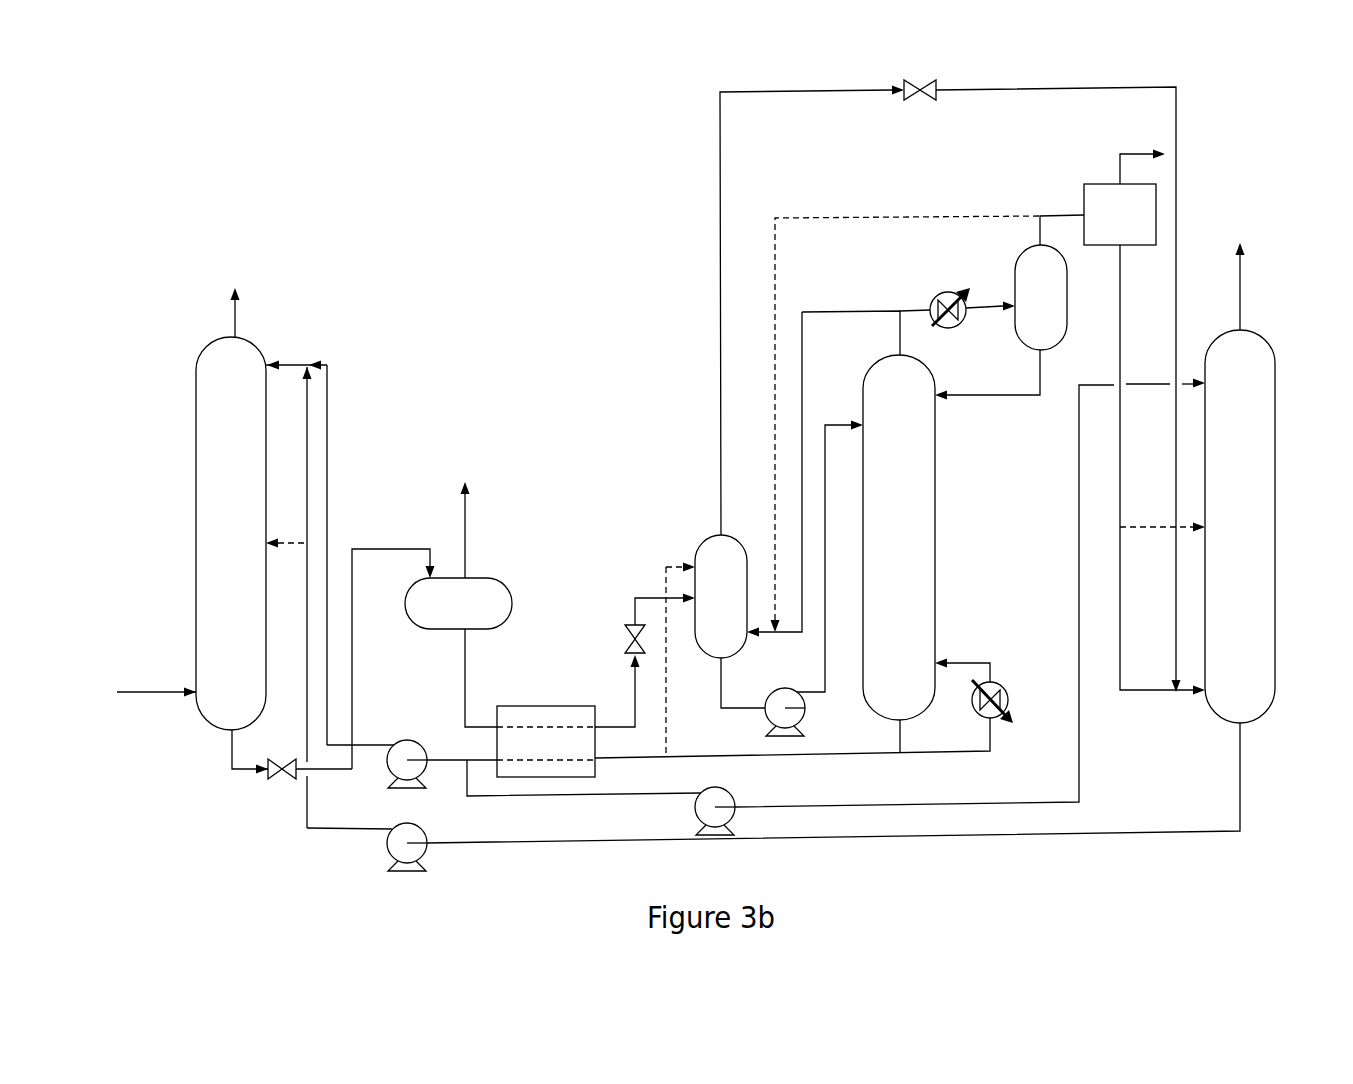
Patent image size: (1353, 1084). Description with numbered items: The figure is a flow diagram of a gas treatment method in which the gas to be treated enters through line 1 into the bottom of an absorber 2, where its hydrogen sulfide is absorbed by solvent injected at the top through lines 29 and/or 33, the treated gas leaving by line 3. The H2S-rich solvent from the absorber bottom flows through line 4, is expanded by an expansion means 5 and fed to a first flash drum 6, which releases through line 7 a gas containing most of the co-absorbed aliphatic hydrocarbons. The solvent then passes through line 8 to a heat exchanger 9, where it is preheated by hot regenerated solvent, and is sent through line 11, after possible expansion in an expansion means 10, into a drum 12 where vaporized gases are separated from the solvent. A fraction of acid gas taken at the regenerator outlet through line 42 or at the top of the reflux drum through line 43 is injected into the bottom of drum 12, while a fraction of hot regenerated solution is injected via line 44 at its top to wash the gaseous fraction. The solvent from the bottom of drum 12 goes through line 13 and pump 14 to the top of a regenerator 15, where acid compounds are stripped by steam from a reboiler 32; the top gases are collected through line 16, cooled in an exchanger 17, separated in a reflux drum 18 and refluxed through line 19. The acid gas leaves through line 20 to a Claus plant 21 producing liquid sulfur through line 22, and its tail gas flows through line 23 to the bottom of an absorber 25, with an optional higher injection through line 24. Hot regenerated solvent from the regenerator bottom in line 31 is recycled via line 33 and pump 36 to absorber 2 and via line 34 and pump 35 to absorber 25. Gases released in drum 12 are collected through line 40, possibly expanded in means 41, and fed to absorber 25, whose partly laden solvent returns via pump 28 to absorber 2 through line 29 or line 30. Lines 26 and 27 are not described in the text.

The line 1 is at (140, 693).
The absorber 2 is at (196, 460).
The line 3 is at (235, 318).
The line 4 is at (243, 770).
The expansion means 5 is at (290, 778).
The first flash drum 6 is at (512, 595).
The line 7 is at (465, 545).
The line 8 is at (465, 680).
The heat exchanger 9 is at (558, 706).
The expansion means 10 is at (625, 640).
The line 11 is at (650, 597).
The drum 12 is at (697, 548).
The line 13 is at (747, 706).
The pump 14 is at (805, 712).
The regenerator 15 is at (935, 515).
The line 16 is at (900, 318).
The exchanger 17 is at (950, 328).
The reflux drum 18 is at (1017, 262).
The line 19 is at (1000, 396).
The line 20 is at (1062, 215).
The plant 21 is at (1090, 184).
The line 22 is at (1140, 154).
The line 23 is at (1120, 315).
The line 24 is at (1140, 527).
The absorber 25 is at (1275, 490).
The overhead line 26 is at (1240, 292).
The bottoms line 27 is at (1240, 772).
The pump 28 is at (388, 848).
The line 29 is at (345, 827).
The line 30 is at (290, 541).
The line 31 is at (852, 753).
The reboiler 32 is at (1008, 700).
The line 33 is at (452, 759).
The line 34 is at (600, 795).
The pump 35 is at (733, 793).
The pump 36 is at (410, 740).
The line 40 is at (720, 318).
The expansion means 41 is at (925, 80).
The line 42 is at (802, 390).
The line 43 is at (828, 218).
The line 44 is at (668, 735).